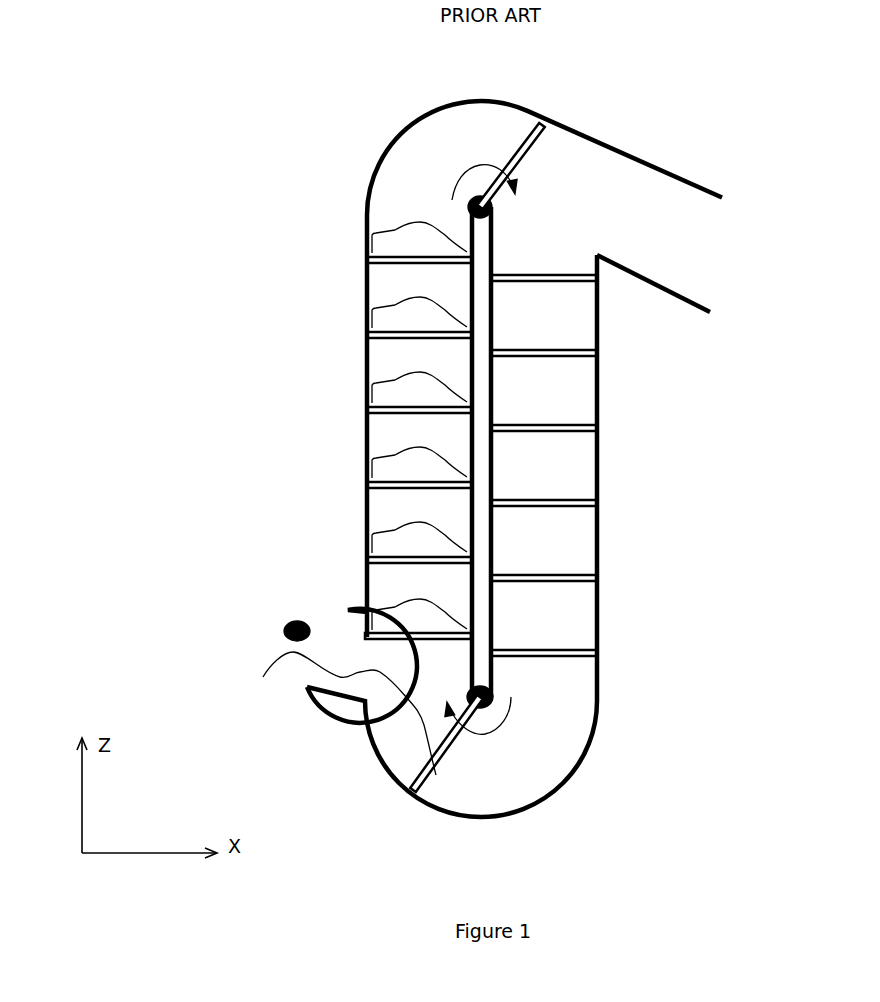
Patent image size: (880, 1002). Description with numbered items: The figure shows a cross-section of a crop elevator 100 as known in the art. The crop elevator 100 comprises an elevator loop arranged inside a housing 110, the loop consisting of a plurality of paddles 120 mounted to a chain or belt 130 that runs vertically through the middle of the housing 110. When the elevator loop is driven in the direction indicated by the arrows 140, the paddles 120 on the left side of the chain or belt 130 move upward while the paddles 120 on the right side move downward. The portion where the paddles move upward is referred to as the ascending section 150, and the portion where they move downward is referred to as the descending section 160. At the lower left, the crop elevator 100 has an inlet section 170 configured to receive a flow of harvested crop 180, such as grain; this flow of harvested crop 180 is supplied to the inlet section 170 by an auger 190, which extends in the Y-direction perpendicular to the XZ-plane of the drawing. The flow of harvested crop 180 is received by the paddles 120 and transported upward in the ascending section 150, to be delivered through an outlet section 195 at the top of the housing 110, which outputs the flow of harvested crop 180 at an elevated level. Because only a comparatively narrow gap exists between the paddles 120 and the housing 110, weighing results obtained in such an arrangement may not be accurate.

The crop elevator 100 is at (195, 123).
The housing 110 is at (597, 473).
The paddles 120 is at (580, 582).
The chain or belt 130 is at (495, 383).
The arrows 140 is at (475, 163).
The ascending section 150 is at (402, 363).
The descending section 160 is at (570, 542).
The inlet section 170 is at (349, 670).
The flow of harvested crop 180 is at (405, 545).
The auger 190 is at (267, 590).
The outlet section 195 is at (632, 212).